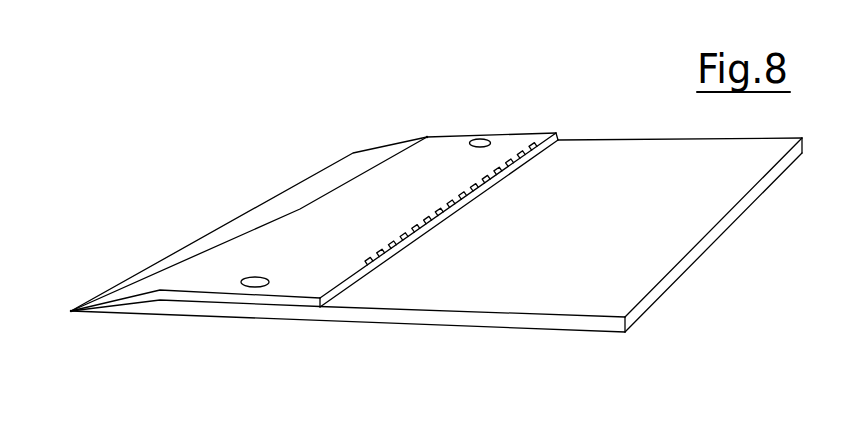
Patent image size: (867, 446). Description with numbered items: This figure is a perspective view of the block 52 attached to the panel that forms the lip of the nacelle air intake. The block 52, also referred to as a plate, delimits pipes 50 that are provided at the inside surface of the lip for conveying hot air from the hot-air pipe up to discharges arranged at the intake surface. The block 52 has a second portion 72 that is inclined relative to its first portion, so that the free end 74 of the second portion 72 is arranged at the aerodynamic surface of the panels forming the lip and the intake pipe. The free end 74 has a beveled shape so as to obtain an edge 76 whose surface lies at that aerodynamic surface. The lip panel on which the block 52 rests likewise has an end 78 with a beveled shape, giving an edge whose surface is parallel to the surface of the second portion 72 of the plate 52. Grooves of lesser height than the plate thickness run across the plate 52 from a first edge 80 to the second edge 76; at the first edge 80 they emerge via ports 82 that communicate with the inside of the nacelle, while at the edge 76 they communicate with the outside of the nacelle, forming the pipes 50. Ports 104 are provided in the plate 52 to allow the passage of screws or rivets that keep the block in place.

The pipes 50 is at (369, 300).
The block 52 is at (288, 187).
The second portion 72 is at (230, 234).
The free end 74 is at (422, 155).
The edge 76 is at (96, 312).
The end 78 is at (141, 311).
The first edge 80 is at (560, 140).
The ports 82 is at (450, 216).
The ports 104 is at (481, 134).